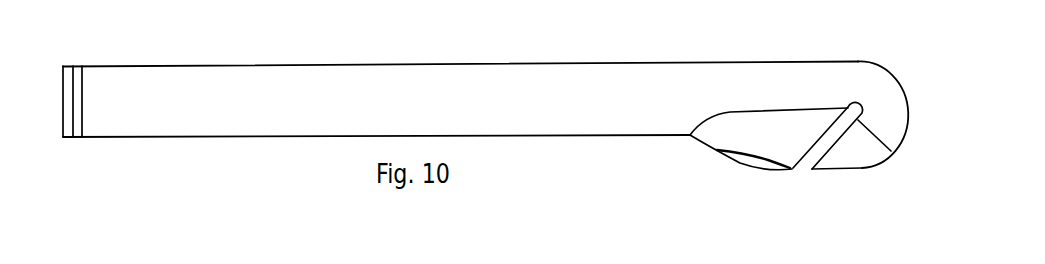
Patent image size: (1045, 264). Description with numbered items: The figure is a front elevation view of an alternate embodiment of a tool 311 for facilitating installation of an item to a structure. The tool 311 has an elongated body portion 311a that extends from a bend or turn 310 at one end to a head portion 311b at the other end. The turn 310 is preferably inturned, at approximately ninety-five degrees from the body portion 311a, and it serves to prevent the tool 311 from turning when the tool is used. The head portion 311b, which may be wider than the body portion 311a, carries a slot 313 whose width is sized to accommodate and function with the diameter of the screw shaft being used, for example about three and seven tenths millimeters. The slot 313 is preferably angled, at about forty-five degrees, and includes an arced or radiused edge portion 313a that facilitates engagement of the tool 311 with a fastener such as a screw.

The bend or turn 310 is at (70, 92).
The tool 311 is at (580, 59).
The body portion 311a is at (227, 98).
The head portion 311b is at (857, 90).
The slot 313 is at (788, 176).
The arced or radiused edge portion 313a is at (717, 150).